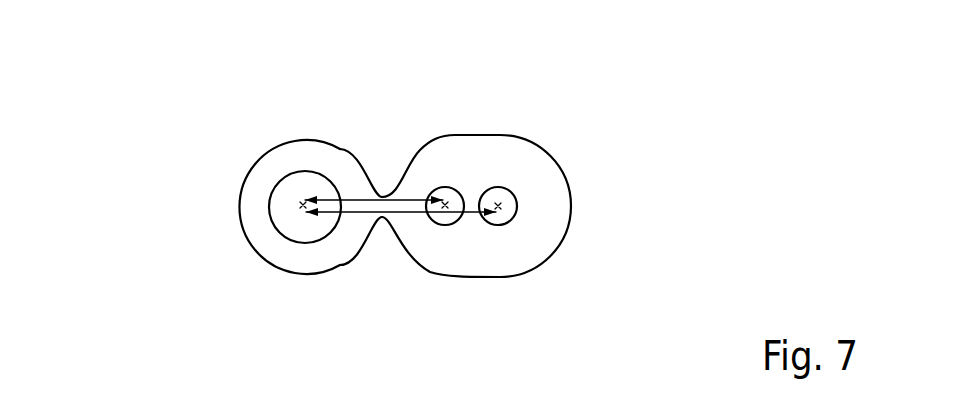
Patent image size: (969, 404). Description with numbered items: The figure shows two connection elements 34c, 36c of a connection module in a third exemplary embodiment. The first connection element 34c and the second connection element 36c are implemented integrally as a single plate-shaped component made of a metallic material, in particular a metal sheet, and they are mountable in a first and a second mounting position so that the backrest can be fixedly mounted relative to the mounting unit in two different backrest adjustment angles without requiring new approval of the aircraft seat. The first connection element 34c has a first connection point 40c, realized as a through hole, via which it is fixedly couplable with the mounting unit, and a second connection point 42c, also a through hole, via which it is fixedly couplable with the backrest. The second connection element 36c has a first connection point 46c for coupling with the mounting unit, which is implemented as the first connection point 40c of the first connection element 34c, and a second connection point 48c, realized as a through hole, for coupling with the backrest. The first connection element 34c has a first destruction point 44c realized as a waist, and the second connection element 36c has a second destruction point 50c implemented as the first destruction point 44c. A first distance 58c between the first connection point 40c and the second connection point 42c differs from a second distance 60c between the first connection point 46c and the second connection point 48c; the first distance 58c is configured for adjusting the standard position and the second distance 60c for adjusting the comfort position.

The first connection element 34c is at (499, 206).
The second connection element 36c is at (543, 222).
The first connection point 40c is at (191, 207).
The first connection point 46c is at (293, 225).
The second connection point 42c is at (452, 200).
The second connection point 48c is at (505, 207).
The first destruction point 44c is at (368, 134).
The second destruction point 50c is at (381, 188).
The first distance 58c is at (408, 199).
The second distance 60c is at (425, 214).